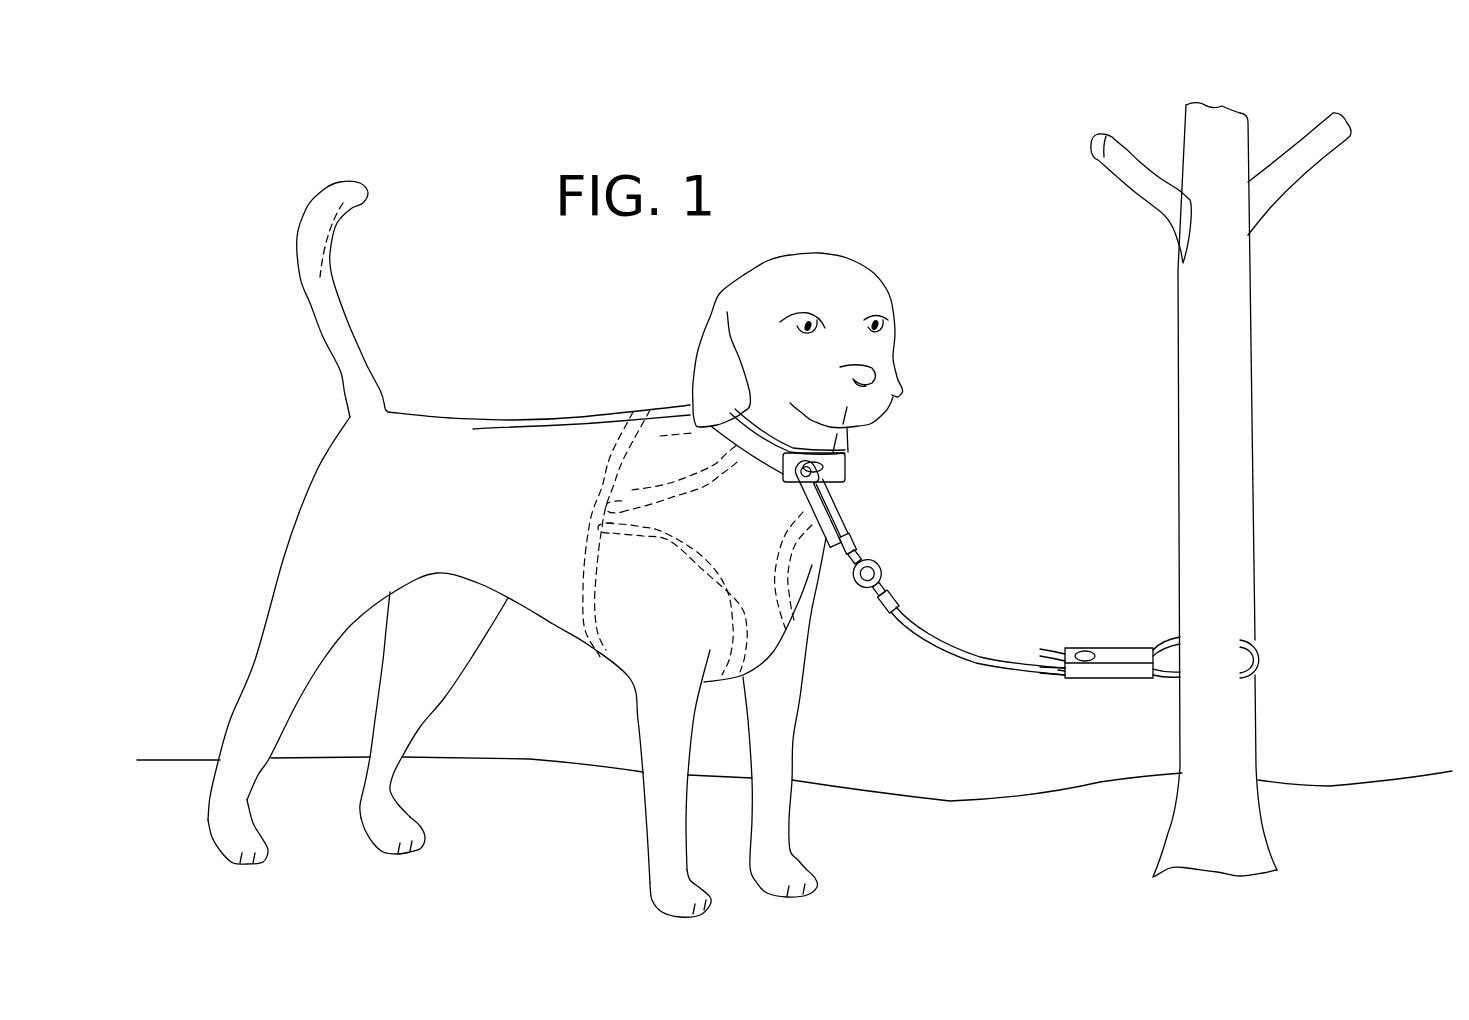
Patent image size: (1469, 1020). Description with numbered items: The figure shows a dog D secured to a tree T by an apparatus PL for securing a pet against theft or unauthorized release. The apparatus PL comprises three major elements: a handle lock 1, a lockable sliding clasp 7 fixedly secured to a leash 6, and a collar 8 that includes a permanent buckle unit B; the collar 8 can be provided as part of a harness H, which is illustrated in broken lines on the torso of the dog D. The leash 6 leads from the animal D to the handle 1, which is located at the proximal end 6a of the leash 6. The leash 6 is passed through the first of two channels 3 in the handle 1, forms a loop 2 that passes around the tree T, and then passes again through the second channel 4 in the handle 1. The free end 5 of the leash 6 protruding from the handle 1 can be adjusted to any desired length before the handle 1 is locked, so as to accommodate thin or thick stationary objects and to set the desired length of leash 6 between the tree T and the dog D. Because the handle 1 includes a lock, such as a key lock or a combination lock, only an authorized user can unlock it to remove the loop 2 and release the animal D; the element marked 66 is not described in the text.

The handle lock 1 is at (1112, 652).
The loop 2 is at (1245, 663).
The first channel 3 is at (1057, 667).
The second channel 4 is at (1152, 645).
The free end 5 is at (1052, 650).
The leash 6 is at (915, 625).
The proximal end 6a is at (1053, 680).
The lockable sliding clasp 7 is at (843, 525).
The collar 8 is at (755, 457).
The ferrule 66 is at (877, 602).
The permanent buckle unit B is at (852, 454).
The dog D is at (507, 514).
The harness H is at (596, 452).
The apparatus for securing a pet PL is at (943, 680).
The tree T is at (1243, 497).